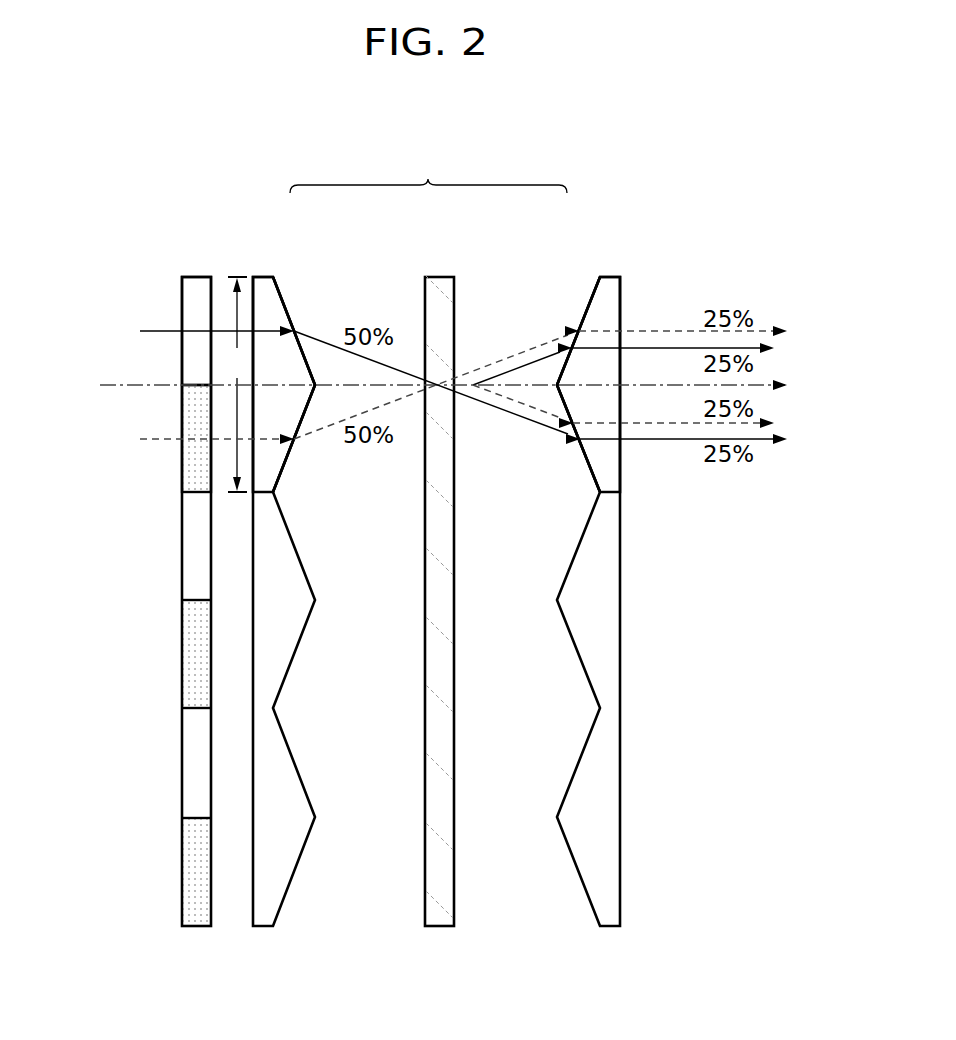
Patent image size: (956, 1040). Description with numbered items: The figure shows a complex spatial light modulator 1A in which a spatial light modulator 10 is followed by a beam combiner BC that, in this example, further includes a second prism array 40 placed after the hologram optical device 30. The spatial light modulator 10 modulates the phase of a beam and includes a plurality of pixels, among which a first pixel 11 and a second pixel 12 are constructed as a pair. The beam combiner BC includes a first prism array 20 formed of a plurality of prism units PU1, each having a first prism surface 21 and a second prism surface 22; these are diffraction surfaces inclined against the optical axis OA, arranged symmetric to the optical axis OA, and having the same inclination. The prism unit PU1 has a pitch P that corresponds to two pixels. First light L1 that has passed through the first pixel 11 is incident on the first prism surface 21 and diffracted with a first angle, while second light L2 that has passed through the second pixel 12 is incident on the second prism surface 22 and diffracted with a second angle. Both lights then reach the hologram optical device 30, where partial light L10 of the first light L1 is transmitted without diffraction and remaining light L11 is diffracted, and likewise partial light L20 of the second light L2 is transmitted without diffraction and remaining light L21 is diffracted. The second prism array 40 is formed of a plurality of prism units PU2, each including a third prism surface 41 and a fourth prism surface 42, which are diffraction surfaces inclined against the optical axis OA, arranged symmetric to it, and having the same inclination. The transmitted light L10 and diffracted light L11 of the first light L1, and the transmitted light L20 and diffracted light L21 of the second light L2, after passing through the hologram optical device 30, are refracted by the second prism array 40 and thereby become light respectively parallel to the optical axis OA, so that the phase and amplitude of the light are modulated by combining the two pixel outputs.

The complex spatial light modulator 1A is at (736, 219).
The spatial light modulator 10 is at (197, 282).
The first pixel 11 is at (187, 302).
The second pixel 12 is at (183, 464).
The first prism array 20 is at (268, 276).
The first prism surface 21 is at (288, 309).
The second prism surface 22 is at (285, 468).
The hologram optical device 30 is at (442, 280).
The second prism array 40 is at (610, 278).
The third prism surface 41 is at (590, 308).
The fourth prism surface 42 is at (588, 465).
The prism unit PU1 is at (265, 310).
The prism unit PU2 is at (615, 303).
The pitch P is at (237, 384).
The beam combiner BC is at (428, 172).
The optical axis OA is at (425, 385).
The first light L1 is at (202, 332).
The second light L2 is at (202, 440).
The transmitted light L10 is at (493, 410).
The diffracted light L11 is at (543, 346).
The transmitted light L20 is at (500, 335).
The diffracted light L21 is at (536, 415).